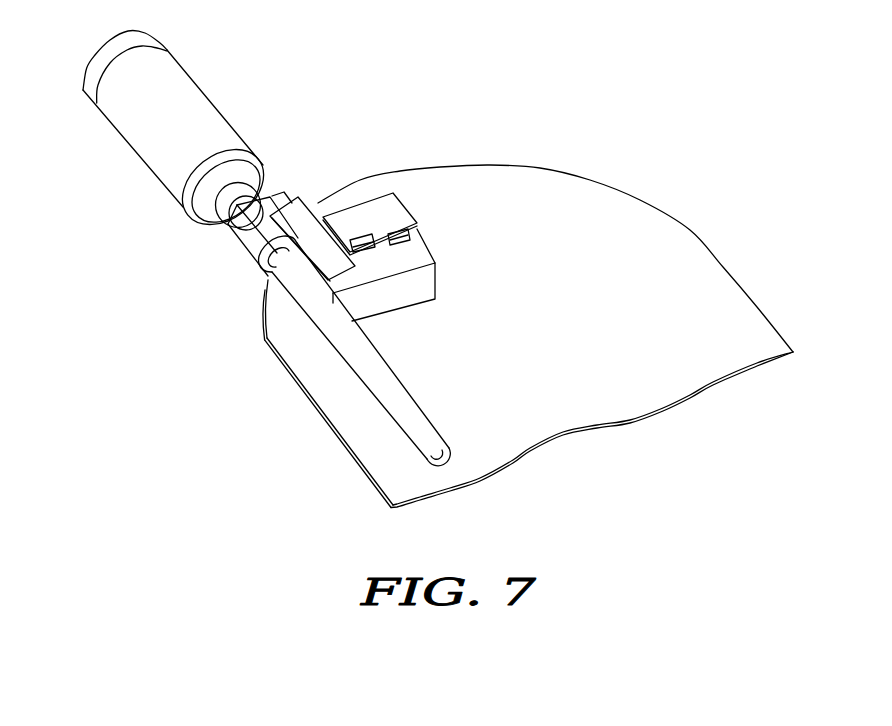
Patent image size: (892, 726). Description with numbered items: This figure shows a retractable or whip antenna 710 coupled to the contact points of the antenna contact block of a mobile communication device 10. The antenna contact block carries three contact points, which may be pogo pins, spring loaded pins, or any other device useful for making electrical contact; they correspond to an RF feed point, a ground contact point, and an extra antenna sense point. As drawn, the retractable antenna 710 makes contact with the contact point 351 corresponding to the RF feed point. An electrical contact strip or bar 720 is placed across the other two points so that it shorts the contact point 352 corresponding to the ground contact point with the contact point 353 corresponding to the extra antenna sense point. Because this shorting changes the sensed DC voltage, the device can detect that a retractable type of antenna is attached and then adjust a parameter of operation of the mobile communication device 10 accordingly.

The mobile communication device 10 is at (317, 408).
The retractable or whip antenna 710 is at (223, 121).
The electrical contact strip or bar 720 is at (371, 205).
The contact point 351 is at (336, 272).
The contact point 352 is at (411, 233).
The contact point 353 is at (365, 247).